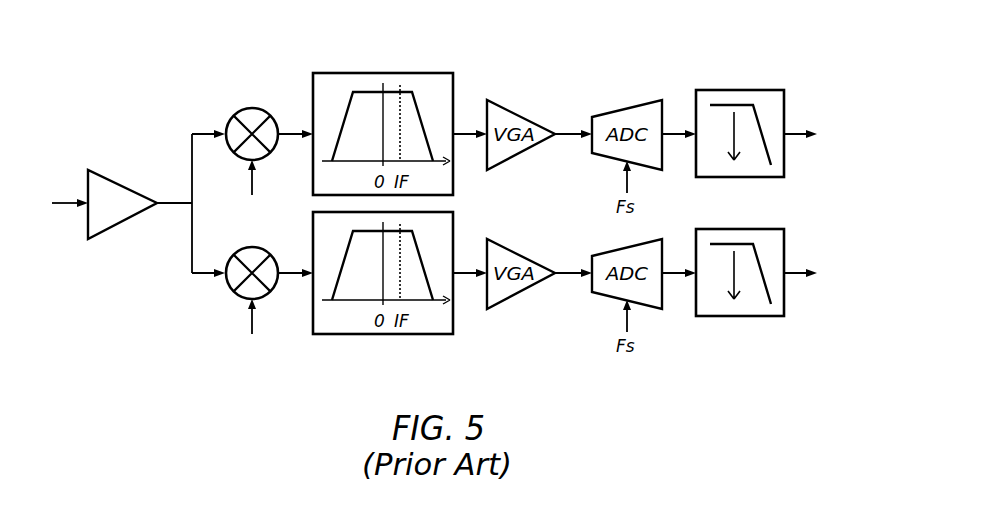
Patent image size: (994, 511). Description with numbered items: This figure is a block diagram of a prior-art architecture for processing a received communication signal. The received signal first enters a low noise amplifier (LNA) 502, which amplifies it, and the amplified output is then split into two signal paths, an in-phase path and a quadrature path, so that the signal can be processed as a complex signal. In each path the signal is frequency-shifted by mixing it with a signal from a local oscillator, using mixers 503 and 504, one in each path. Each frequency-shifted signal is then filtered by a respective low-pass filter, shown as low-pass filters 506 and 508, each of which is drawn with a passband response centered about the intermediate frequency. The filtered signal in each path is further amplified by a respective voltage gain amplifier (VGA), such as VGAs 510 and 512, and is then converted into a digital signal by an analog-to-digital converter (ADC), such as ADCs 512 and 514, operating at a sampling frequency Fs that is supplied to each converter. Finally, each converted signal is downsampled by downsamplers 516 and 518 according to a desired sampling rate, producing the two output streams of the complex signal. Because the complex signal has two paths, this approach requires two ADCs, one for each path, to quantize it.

The low noise amplifier (LNA) 502 is at (116, 157).
The mixer 503 is at (237, 293).
The mixer 504 is at (253, 108).
The low-pass filter 506 is at (328, 73).
The low-pass filter 508 is at (500, 103).
The voltage gain amplifier (VGA) 510 is at (520, 300).
The analog-to-digital converter (ADC) 512 is at (631, 108).
The analog-to-digital converter (ADC) 514 is at (600, 298).
The downsampler 516 is at (741, 90).
The downsampler 518 is at (751, 319).